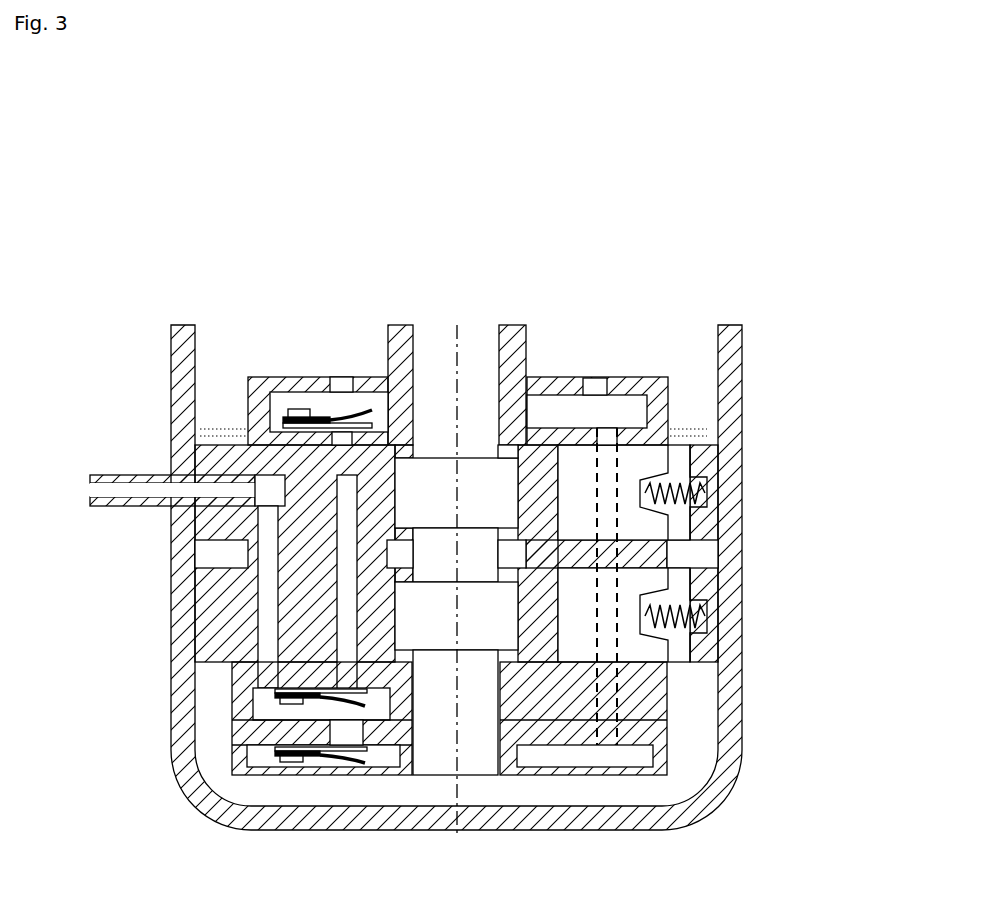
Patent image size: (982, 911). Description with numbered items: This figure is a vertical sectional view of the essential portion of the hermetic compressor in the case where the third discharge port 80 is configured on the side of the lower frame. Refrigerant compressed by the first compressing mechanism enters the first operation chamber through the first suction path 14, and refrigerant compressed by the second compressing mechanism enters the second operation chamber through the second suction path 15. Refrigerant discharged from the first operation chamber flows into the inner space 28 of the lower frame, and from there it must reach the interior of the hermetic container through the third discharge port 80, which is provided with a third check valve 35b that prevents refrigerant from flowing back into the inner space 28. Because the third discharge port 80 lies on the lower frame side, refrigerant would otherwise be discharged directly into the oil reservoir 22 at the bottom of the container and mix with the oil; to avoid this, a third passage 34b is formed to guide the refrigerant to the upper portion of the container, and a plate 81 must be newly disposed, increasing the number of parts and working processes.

The first suction path 14 is at (743, 593).
The second suction path 15 is at (743, 473).
The oil reservoir 22 is at (687, 432).
The inner space 28 is at (263, 697).
The third passage 34b is at (608, 732).
The third check valve 35b is at (303, 757).
The third discharge port 80 is at (353, 732).
The plate 81 is at (658, 733).